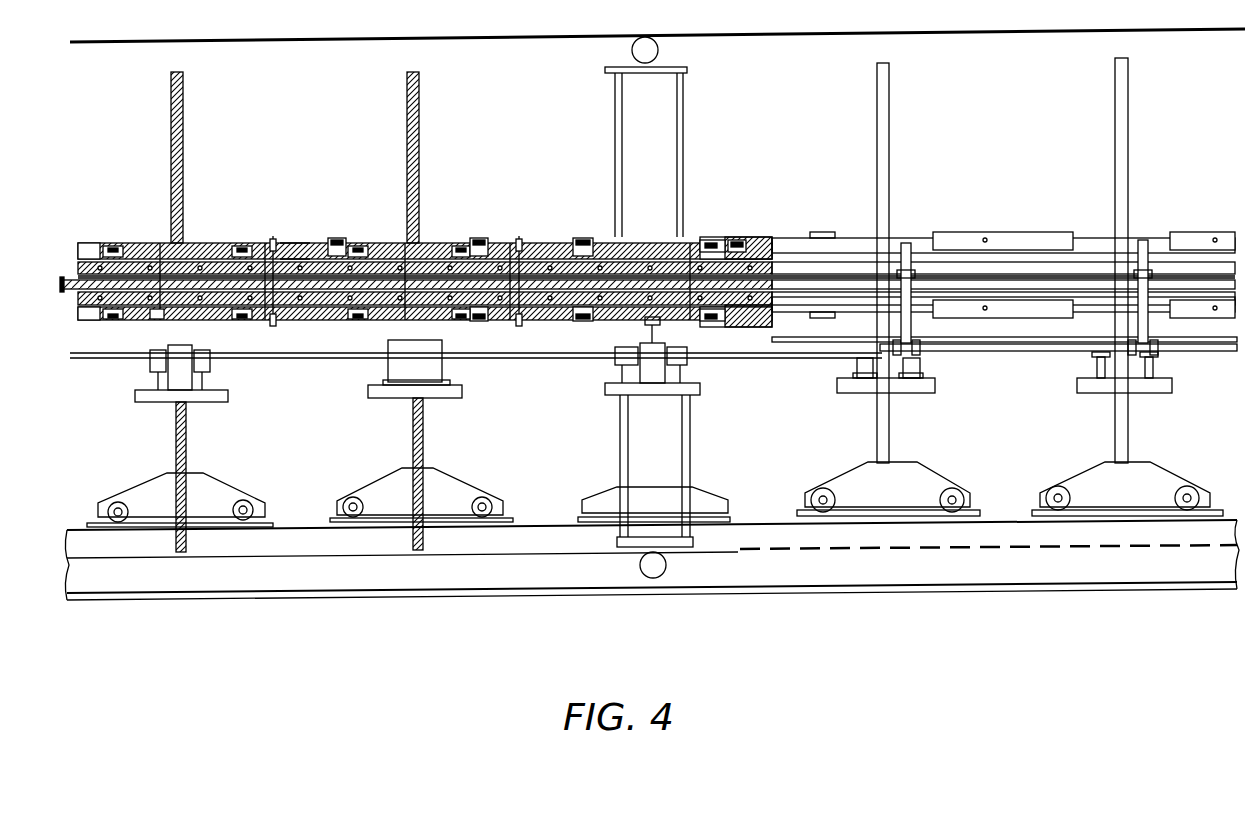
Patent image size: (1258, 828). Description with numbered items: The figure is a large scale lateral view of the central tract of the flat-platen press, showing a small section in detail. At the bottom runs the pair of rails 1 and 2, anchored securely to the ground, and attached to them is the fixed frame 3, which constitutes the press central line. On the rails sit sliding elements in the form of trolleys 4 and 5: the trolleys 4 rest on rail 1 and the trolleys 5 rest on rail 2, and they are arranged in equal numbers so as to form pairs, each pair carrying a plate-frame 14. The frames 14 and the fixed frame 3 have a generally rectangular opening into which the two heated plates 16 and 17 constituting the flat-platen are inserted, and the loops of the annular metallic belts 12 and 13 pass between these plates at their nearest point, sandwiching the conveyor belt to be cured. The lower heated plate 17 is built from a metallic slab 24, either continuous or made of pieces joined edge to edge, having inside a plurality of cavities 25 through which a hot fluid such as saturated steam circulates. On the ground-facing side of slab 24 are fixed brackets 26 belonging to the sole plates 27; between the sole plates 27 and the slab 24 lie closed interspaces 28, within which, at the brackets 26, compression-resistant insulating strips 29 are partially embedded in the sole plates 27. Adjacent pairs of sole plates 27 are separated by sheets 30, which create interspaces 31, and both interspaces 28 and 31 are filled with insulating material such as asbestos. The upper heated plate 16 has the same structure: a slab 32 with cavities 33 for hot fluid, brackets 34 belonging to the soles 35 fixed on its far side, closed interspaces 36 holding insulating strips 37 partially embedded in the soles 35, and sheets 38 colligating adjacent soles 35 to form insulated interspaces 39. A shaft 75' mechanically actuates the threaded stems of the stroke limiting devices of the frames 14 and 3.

The rail 1 is at (1003, 537).
The rail 2 is at (577, 565).
The fixed frame 3 is at (684, 96).
The trolley 4 is at (842, 486).
The trolley 5 is at (216, 495).
The annular metallic belt 12 is at (486, 38).
The annular metallic belt 13 is at (298, 557).
The plate-frame 14 is at (205, 96).
The heated plate 16 is at (88, 243).
The heated plate 17 is at (80, 322).
The slab 24 is at (241, 308).
The cavities 25 is at (300, 308).
The brackets 26 is at (102, 322).
The sole plates 27 is at (232, 325).
The interspaces 28 is at (158, 318).
The strips 29 is at (132, 322).
The sheets 30 is at (272, 320).
The interspaces 31 is at (326, 320).
The slab 32 is at (152, 260).
The cavities 33 is at (211, 260).
The brackets 34 is at (332, 240).
The soles 35 is at (223, 244).
The interspaces 36 is at (165, 242).
The strips 37 is at (114, 246).
The sheets 38 is at (274, 236).
The interspaces 39 is at (300, 244).
The shaft 75' is at (1004, 359).